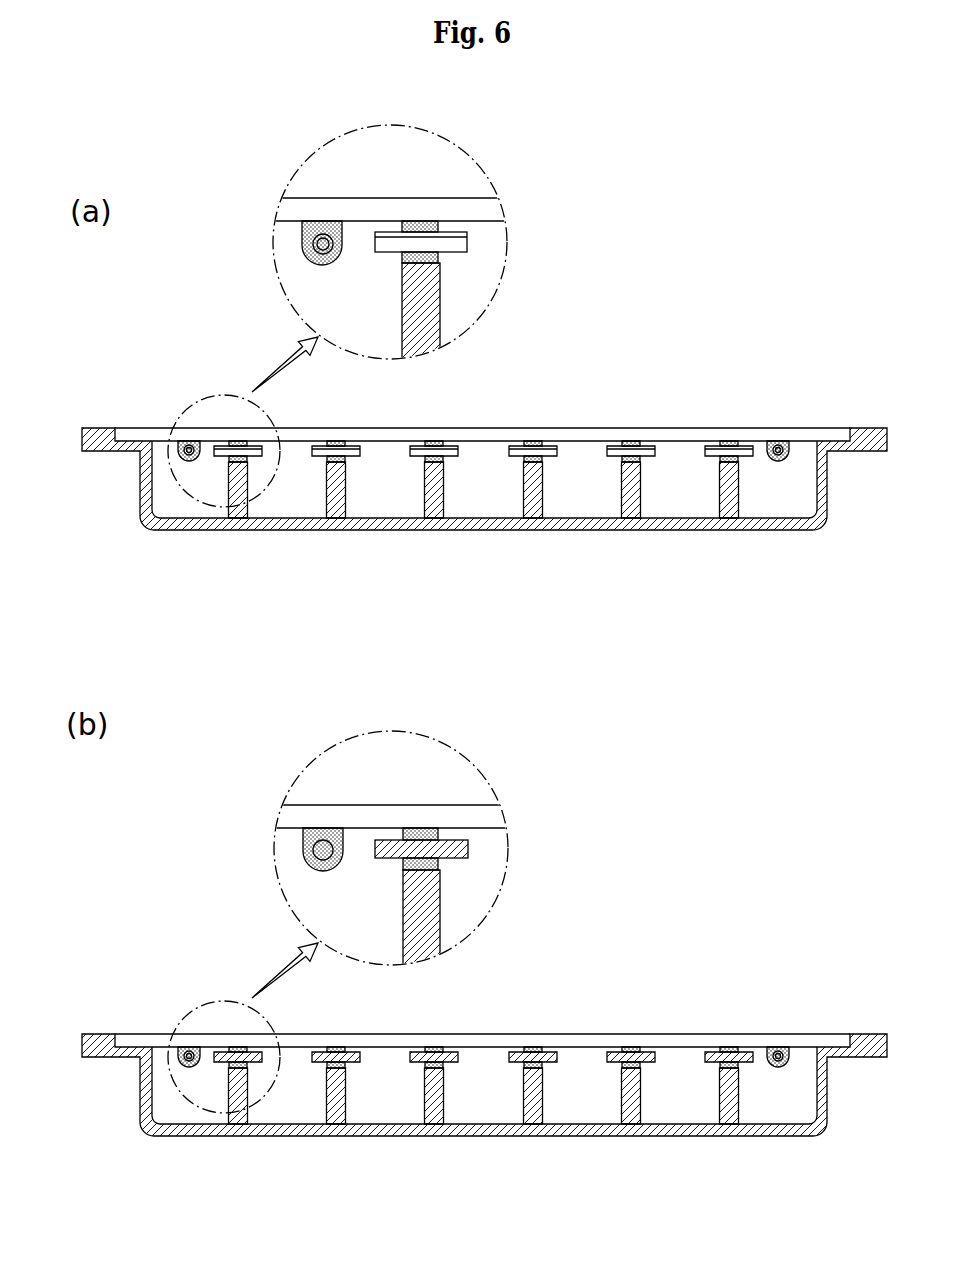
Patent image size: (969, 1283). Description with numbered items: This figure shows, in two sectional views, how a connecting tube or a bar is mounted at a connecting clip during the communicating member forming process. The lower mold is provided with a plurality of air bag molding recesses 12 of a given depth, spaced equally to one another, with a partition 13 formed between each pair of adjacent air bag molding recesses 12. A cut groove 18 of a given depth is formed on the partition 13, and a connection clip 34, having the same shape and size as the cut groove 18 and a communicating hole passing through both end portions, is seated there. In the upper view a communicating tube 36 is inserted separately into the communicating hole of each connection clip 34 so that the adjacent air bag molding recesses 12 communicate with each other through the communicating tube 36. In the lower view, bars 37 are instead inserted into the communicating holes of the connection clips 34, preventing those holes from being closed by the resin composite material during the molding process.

The air bag molding recess 12 is at (592, 472).
The partition 13 is at (425, 305).
The cut groove 18 is at (418, 266).
The connection clip 34 is at (329, 221).
The communicating tube 36 is at (463, 242).
The bar 37 is at (468, 846).